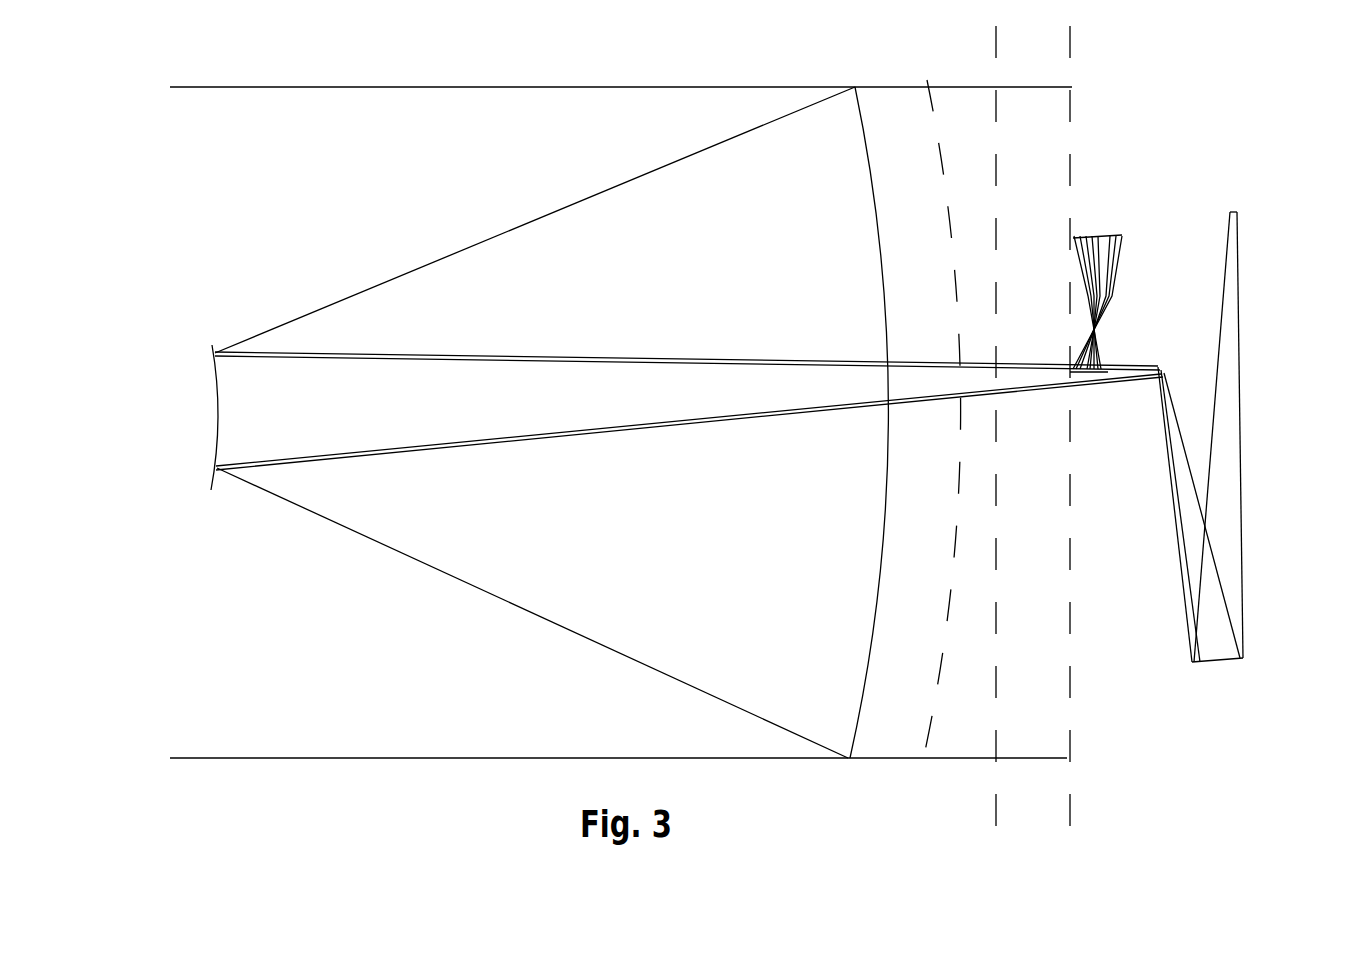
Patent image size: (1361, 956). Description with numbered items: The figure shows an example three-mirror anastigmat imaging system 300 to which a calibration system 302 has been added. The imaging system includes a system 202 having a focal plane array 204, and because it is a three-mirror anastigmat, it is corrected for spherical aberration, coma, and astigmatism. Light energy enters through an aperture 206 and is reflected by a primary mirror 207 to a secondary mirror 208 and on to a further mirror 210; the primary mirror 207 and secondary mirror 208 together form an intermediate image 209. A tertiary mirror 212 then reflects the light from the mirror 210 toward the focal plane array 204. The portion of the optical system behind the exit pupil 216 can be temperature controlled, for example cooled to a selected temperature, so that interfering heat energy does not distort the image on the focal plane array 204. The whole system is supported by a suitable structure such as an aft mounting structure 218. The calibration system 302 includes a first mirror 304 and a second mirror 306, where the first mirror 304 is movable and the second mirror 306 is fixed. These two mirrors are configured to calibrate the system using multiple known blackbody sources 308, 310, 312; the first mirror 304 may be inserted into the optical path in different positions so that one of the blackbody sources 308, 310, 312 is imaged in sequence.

The three-mirror anastigmat imaging system 300 is at (1198, 78).
The system 202 is at (352, 195).
The focal plane array 204 is at (1232, 419).
The aperture 206 is at (760, 285).
The primary mirror 207 is at (846, 422).
The secondary mirror 208 is at (210, 439).
The intermediate image 209 is at (1130, 383).
The mirror 210 is at (1199, 503).
The tertiary mirror 212 is at (1216, 677).
The exit pupil 216 is at (1213, 440).
The aft mounting structure 218 is at (1050, 125).
The calibration system 302 is at (1203, 201).
The first mirror 304 is at (1092, 394).
The second mirror 306 is at (1097, 284).
The blackbody source 308 is at (1115, 303).
The blackbody source 310 is at (1118, 298).
The blackbody source 312 is at (1128, 290).